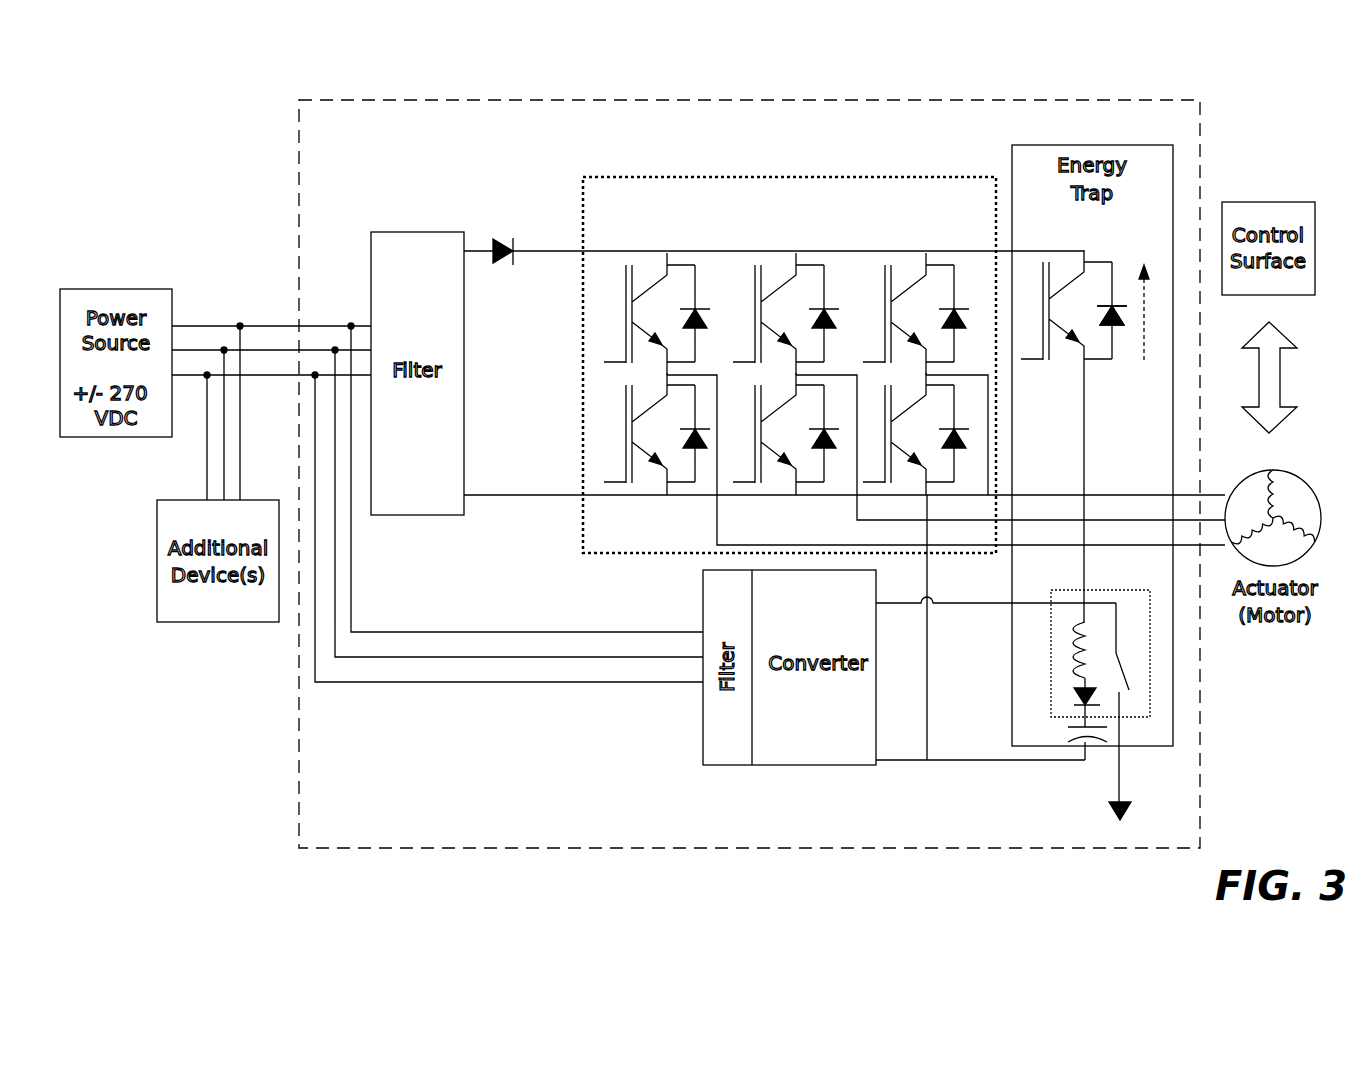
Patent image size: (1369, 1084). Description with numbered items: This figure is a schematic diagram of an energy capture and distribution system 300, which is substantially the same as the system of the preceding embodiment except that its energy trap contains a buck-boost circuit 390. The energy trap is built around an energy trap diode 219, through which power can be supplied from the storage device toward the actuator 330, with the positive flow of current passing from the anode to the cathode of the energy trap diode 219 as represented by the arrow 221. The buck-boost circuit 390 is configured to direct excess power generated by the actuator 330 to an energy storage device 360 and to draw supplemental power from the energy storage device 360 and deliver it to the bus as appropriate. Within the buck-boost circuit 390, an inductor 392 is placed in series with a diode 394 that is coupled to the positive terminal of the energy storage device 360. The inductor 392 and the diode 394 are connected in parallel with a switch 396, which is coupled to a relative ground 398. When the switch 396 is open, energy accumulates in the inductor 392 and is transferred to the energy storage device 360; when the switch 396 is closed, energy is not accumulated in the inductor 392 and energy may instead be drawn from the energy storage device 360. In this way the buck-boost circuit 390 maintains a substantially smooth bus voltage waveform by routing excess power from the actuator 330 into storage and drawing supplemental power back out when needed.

The energy capture and distribution system 300 is at (110, 148).
The energy trap diode 219 is at (1113, 306).
The arrow 221 is at (1146, 318).
The actuator 330 is at (1285, 472).
The buck-boost circuit 390 is at (1150, 638).
The inductor 392 is at (1072, 645).
The diode 394 is at (1078, 690).
The switch 396 is at (1130, 683).
The relative ground 398 is at (1110, 805).
The energy storage device 360 is at (1048, 733).